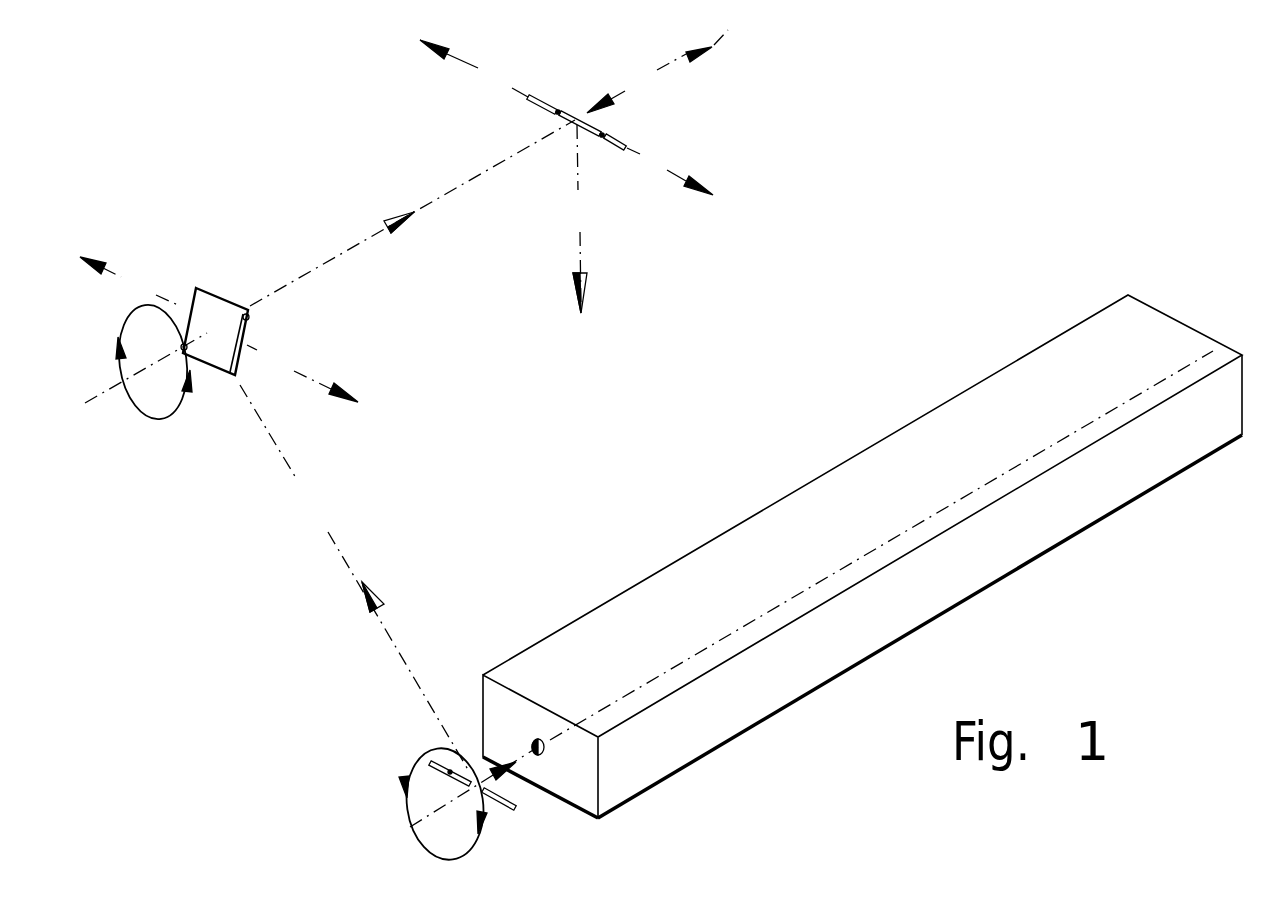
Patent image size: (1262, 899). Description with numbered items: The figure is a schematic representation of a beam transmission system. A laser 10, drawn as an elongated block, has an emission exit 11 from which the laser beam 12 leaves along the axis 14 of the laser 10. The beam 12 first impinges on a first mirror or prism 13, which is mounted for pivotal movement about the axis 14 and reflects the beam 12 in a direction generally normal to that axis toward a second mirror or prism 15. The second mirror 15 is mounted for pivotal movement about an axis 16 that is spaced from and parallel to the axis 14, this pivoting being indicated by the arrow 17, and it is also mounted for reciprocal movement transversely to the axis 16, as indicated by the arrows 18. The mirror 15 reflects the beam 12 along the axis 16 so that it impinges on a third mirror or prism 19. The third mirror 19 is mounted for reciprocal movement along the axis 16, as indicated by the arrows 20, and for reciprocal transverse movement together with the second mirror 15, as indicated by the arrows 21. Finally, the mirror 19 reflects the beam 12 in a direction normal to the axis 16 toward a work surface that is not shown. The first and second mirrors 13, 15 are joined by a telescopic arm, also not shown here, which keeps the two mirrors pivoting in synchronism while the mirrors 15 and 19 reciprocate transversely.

The laser 10 is at (983, 385).
The emission exit 11 is at (538, 741).
The laser beam 12 is at (417, 496).
The first mirror or prism 13 is at (444, 763).
The axis of the laser 14 is at (881, 545).
The second mirror or prism 15 is at (249, 311).
The axis 16 is at (406, 216).
The arrow 17 is at (144, 369).
The arrows 18 is at (219, 329).
The third mirror or prism 19 is at (555, 105).
The arrows 20 is at (607, 109).
The arrows 21 is at (566, 117).